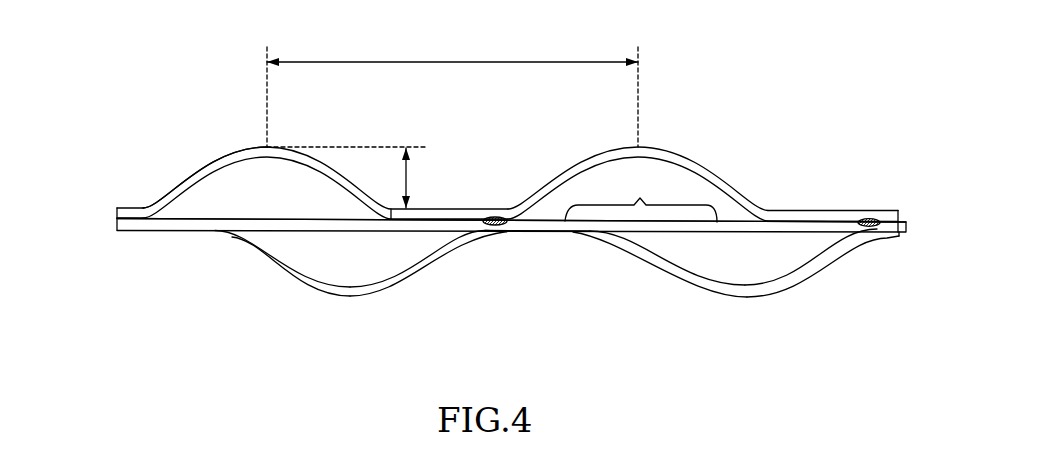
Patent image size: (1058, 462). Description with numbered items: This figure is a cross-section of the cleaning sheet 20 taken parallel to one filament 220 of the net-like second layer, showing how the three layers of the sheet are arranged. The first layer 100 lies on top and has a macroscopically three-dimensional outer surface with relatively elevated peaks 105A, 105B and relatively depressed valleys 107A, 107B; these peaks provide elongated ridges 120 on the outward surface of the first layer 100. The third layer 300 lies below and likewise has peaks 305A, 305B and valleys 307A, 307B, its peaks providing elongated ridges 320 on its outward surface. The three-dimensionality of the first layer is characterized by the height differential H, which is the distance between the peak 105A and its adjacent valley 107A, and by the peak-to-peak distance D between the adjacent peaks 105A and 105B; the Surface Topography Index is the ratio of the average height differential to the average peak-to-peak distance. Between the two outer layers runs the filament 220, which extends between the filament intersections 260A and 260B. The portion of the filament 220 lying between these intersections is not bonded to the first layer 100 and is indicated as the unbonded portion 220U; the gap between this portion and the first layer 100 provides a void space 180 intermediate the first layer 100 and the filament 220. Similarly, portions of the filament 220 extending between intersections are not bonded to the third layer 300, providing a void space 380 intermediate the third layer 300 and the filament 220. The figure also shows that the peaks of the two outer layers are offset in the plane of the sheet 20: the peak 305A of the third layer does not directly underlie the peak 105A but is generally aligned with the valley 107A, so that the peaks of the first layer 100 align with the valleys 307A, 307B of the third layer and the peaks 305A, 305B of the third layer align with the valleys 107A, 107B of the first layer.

The cleaning sheet 20 is at (767, 69).
The first layer 100 is at (499, 179).
The elongated ridges 120 is at (203, 159).
The peak of the first layer 105A is at (247, 141).
The peak of the first layer 105B is at (645, 142).
The valley of the first layer 107A is at (366, 190).
The valley of the first layer 107B is at (761, 201).
The void space 180 is at (596, 179).
The filament 220 is at (117, 218).
The unbonded portion of the filament 220U is at (641, 197).
The filament intersection 260A is at (497, 216).
The filament intersection 260B is at (870, 217).
The third layer 300 is at (494, 222).
The elongated ridges 320 is at (541, 302).
The peak of the third layer 305A is at (376, 302).
The peak of the third layer 305B is at (697, 307).
The valley of the third layer 307A is at (234, 242).
The valley of the third layer 307B is at (601, 245).
The void space 380 is at (343, 252).
The peak-to-peak distance D is at (407, 62).
The height differential H is at (409, 176).